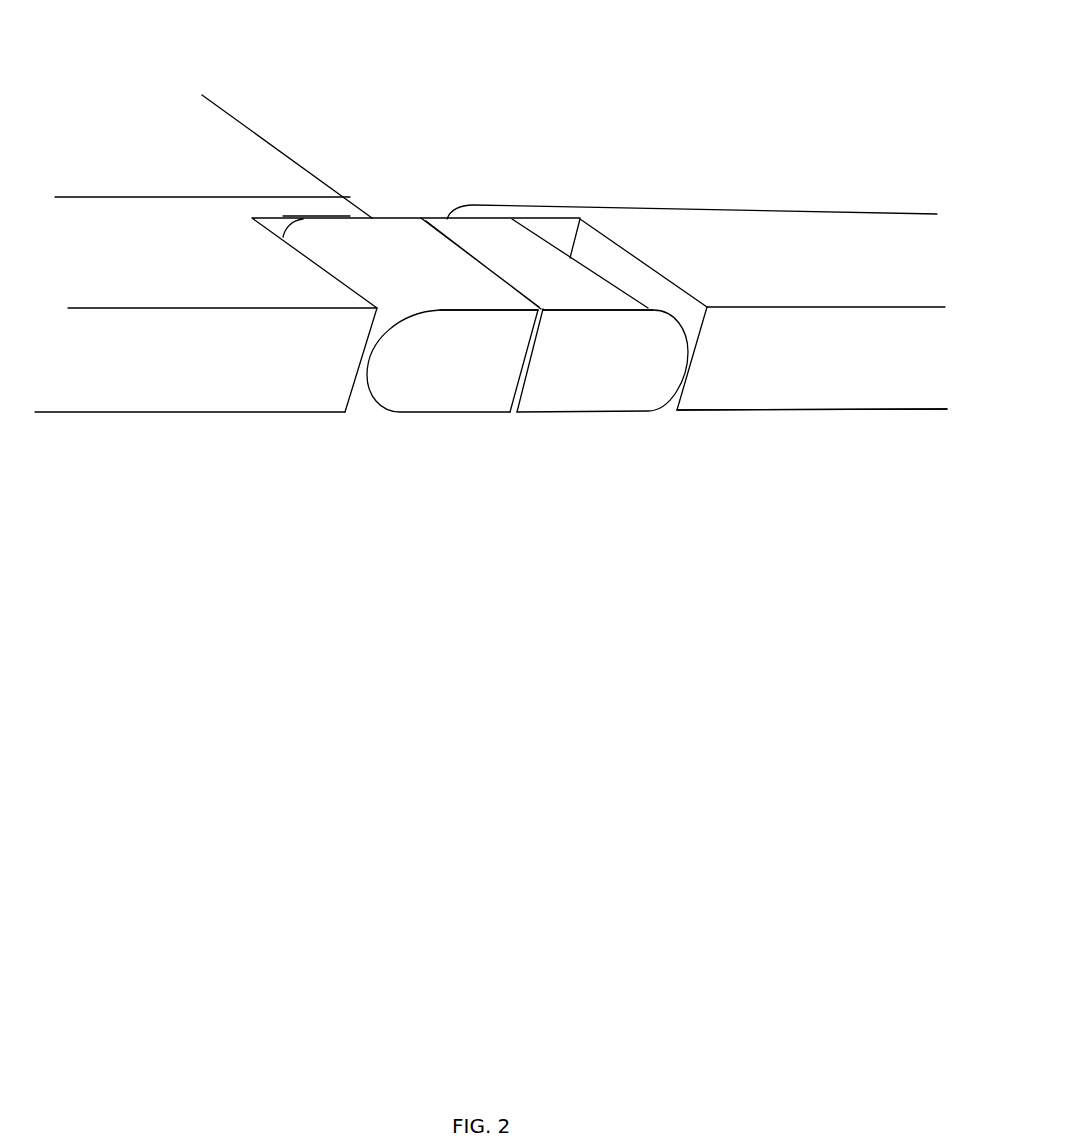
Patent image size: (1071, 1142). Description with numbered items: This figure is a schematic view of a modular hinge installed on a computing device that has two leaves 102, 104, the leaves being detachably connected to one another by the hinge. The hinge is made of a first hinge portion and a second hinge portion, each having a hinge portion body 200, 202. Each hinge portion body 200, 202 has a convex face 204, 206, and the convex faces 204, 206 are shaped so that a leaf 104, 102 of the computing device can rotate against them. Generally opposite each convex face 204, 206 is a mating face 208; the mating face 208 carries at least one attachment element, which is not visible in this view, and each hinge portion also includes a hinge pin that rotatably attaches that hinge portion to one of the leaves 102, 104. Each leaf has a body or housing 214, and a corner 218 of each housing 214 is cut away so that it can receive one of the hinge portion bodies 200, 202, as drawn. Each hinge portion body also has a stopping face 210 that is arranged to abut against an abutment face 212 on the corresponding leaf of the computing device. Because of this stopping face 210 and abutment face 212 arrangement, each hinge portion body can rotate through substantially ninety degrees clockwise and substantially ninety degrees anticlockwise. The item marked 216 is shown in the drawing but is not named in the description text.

The leaf 102 is at (155, 147).
The leaf 104 is at (592, 148).
The hinge portion body 200 is at (527, 393).
The hinge portion body 202 is at (468, 380).
The convex face 204 is at (667, 380).
The convex face 206 is at (358, 387).
The mating face 208 is at (530, 370).
The stopping face 210 is at (570, 278).
The abutment face 212 is at (677, 295).
The housing 214 is at (815, 393).
The insertion direction 216 is at (418, 168).
The corner 218 is at (593, 230).